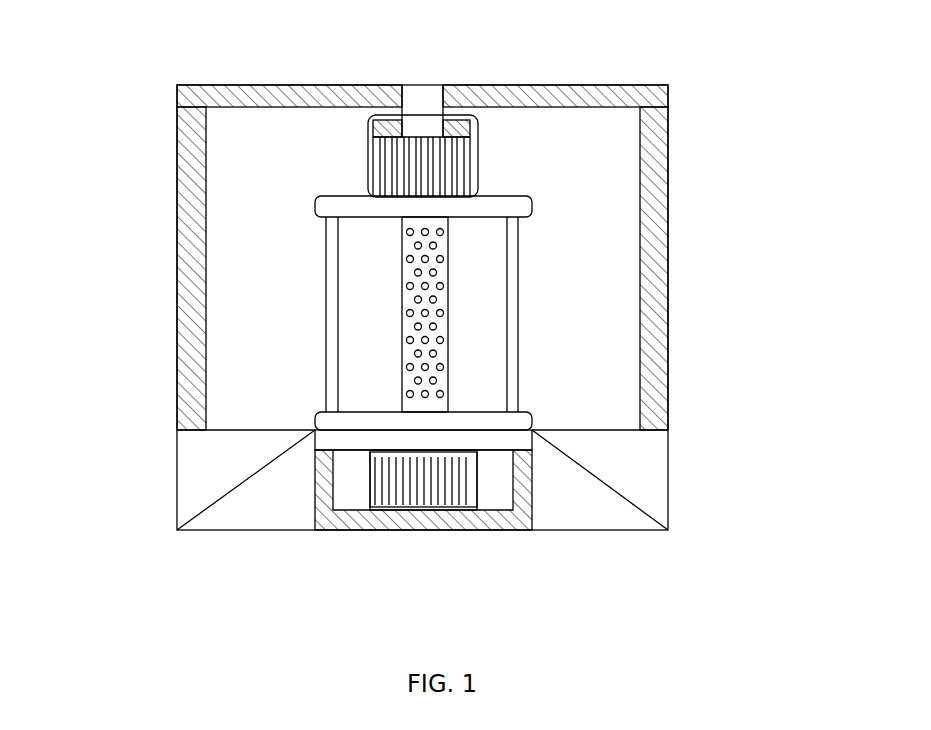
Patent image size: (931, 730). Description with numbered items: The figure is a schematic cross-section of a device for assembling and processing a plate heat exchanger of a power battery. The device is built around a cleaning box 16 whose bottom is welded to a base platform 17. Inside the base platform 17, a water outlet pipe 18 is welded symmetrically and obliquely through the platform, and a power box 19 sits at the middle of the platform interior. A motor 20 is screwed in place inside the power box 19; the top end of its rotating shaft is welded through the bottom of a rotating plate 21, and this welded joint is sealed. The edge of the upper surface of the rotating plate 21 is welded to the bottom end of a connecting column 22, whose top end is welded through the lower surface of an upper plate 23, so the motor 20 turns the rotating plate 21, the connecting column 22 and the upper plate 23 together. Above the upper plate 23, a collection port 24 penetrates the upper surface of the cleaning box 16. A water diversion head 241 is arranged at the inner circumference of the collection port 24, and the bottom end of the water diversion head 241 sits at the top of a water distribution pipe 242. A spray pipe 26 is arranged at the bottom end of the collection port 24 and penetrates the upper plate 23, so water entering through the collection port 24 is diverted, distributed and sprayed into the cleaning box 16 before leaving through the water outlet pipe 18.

The cleaning box 16 is at (183, 200).
The base platform 17 is at (567, 482).
The water outlet pipe 18 is at (198, 460).
The power box 19 is at (368, 512).
The motor 20 is at (437, 485).
The rotating plate 21 is at (528, 425).
The connecting column 22 is at (336, 298).
The upper plate 23 is at (325, 207).
The collection port 24 is at (452, 92).
The water diversion head 241 is at (437, 98).
The water distribution pipe 242 is at (468, 160).
The spray pipe 26 is at (435, 285).